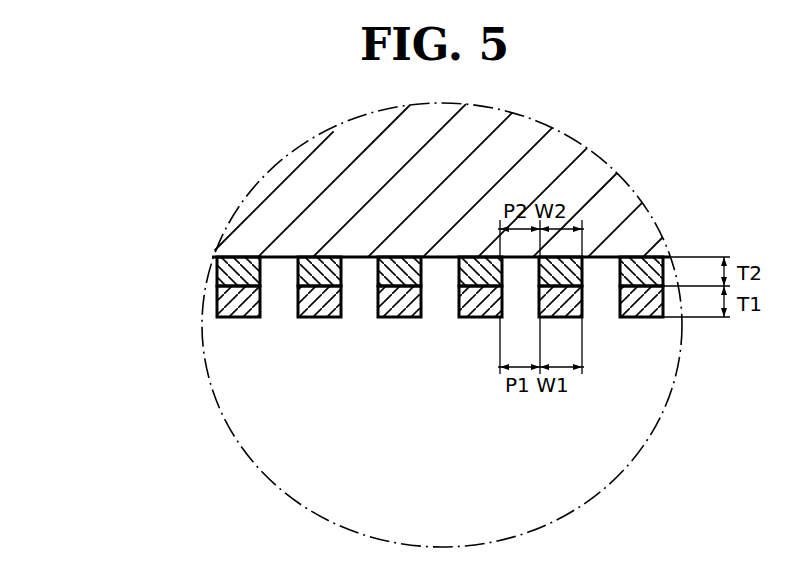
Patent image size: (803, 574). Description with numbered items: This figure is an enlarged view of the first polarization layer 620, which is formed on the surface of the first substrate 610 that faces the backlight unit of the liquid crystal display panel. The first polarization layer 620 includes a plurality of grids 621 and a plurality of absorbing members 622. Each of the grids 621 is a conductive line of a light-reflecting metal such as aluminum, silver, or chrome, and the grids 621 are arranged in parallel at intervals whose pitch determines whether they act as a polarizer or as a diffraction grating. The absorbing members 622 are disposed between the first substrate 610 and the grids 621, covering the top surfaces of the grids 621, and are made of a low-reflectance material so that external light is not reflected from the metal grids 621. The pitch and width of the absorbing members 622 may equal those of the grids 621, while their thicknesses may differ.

The first substrate 610 is at (622, 199).
The first polarization layer 620 is at (350, 287).
The grids 621 is at (217, 300).
The absorbing members 622 is at (217, 271).